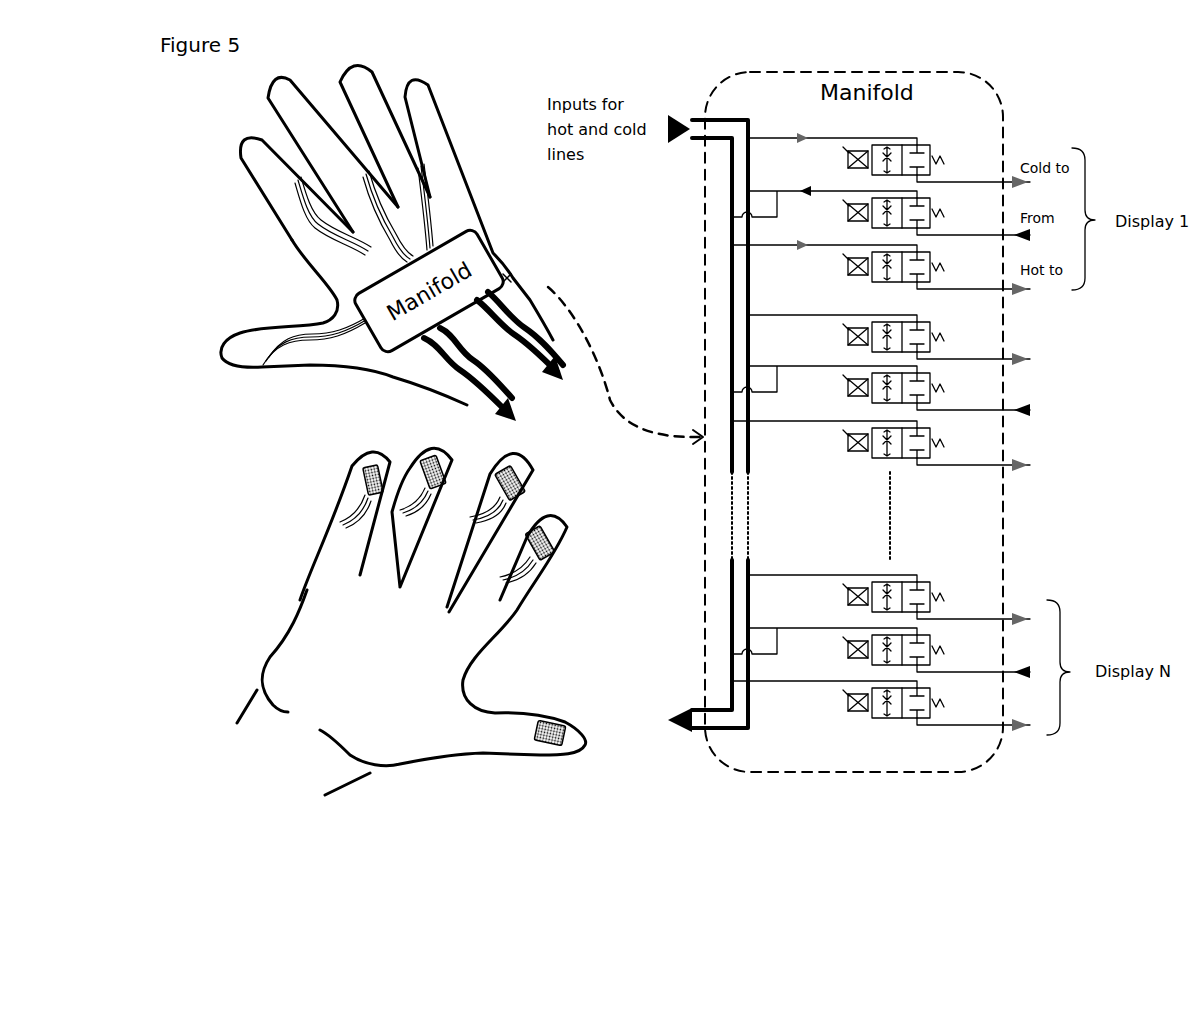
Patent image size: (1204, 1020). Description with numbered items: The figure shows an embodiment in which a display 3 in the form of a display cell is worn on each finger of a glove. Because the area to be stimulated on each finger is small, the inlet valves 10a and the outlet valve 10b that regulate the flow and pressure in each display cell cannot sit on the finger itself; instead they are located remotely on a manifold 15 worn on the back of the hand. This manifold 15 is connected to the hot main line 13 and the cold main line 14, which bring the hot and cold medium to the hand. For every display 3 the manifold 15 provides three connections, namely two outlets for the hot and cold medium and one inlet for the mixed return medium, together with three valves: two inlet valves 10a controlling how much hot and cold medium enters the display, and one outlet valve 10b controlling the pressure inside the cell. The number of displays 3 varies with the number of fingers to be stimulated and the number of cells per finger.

The display 3 is at (560, 520).
The inlet valves 10a is at (937, 444).
The outlet valve 10b is at (937, 389).
The hot main line 13 is at (732, 300).
The cold main line 14 is at (747, 337).
The manifold 15 is at (732, 250).